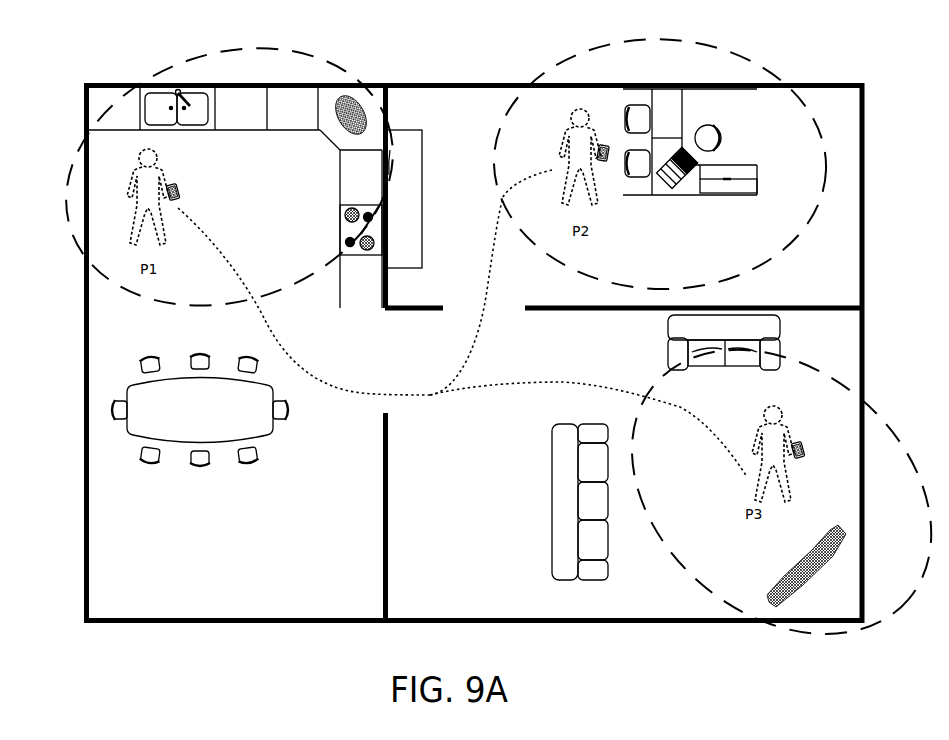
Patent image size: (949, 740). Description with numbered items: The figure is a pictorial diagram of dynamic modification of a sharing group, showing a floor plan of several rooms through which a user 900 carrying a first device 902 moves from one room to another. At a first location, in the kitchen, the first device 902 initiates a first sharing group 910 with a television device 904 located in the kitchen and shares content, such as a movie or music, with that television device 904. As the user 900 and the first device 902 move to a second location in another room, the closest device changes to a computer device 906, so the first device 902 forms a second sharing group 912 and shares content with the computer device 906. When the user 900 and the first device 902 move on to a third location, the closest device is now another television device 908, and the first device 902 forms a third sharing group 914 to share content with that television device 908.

The user 900 is at (139, 160).
The first device 902 is at (179, 184).
The television device 904 is at (346, 133).
The computer device 906 is at (671, 186).
The television device 908 is at (809, 557).
The first sharing group 910 is at (346, 73).
The second sharing group 912 is at (706, 47).
The third sharing group 914 is at (675, 562).